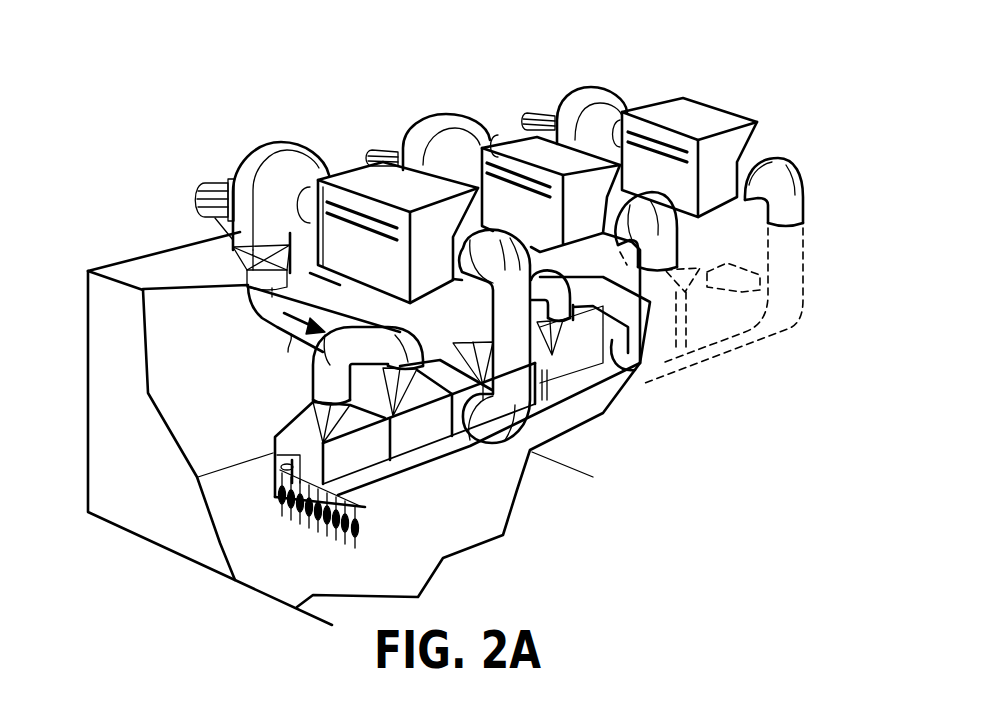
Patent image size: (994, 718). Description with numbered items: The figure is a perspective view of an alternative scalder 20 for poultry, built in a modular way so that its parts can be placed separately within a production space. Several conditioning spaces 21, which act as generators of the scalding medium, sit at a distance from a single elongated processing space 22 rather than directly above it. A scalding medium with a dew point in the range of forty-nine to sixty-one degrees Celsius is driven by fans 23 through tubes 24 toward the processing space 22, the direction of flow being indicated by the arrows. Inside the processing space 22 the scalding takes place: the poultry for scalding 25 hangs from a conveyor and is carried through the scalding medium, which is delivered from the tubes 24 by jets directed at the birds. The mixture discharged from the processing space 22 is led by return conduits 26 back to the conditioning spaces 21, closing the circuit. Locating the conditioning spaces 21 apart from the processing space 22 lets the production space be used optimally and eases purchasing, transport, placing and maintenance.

The scalder 20 is at (116, 131).
The conditioning spaces 21 is at (363, 183).
The processing space 22 is at (423, 438).
The fans 23 is at (267, 142).
The tubes 24 is at (263, 318).
The poultry for scalding 25 is at (345, 540).
The return conduits 26 is at (550, 388).